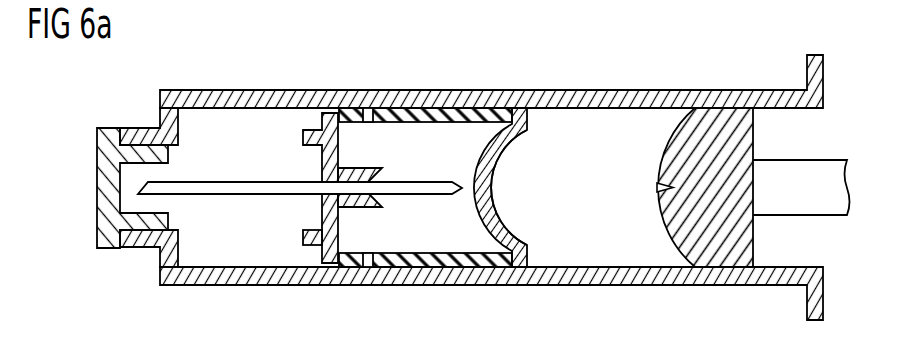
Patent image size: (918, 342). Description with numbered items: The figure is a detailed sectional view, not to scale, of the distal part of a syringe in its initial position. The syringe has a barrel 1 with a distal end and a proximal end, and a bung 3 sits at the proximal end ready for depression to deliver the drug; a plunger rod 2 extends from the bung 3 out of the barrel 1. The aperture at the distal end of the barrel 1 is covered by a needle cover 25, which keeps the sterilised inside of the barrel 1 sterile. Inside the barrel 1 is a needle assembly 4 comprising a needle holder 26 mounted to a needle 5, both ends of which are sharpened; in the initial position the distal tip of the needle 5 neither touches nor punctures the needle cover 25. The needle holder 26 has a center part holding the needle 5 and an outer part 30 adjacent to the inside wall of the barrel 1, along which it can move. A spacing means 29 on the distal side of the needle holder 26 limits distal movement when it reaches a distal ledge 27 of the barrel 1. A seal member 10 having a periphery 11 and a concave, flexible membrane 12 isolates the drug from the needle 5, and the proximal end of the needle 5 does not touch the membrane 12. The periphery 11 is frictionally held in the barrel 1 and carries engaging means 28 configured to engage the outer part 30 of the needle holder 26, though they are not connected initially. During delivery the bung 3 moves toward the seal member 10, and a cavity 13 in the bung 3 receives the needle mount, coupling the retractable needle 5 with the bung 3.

The barrel 1 is at (613, 97).
The plunger rod 2 is at (795, 175).
The bung 3 is at (727, 116).
The needle assembly 4 is at (319, 180).
The needle 5 is at (248, 184).
The seal member 10 is at (513, 118).
The periphery 11 is at (428, 118).
The membrane 12 is at (493, 172).
The cavity 13 is at (671, 187).
The needle cover 25 is at (100, 158).
The needle holder 26 is at (345, 210).
The distal ledge 27 is at (162, 118).
The engaging means 28 is at (367, 110).
The spacing means 29 is at (302, 240).
The outer part 30 is at (364, 268).